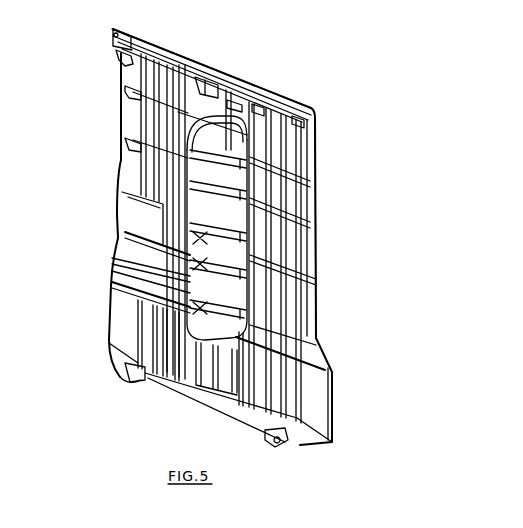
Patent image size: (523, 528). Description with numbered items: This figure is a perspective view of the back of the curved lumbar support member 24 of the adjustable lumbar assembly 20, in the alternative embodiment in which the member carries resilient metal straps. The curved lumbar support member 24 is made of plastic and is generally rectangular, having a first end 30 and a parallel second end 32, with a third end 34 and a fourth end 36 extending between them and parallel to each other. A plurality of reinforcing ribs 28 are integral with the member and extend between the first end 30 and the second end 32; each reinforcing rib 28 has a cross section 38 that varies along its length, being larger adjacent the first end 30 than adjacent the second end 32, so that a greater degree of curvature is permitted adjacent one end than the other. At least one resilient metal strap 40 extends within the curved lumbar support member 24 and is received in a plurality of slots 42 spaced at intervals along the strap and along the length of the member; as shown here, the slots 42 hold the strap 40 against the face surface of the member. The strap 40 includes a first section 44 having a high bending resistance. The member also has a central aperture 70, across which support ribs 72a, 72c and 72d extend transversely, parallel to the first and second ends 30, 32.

The adjustable lumbar assembly 20 is at (318, 99).
The curved lumbar support member 24 is at (317, 265).
The reinforcing ribs 28 is at (121, 50).
The first end 30 is at (178, 52).
The second end 32 is at (193, 402).
The third end 34 is at (121, 200).
The fourth end 36 is at (306, 298).
The cross section 38 is at (121, 168).
The resilient metal strap 40 is at (116, 272).
The slots 42 is at (130, 86).
The first section 44 is at (120, 210).
The central aperture 70 is at (125, 236).
The support rib 72a is at (188, 133).
The support rib 72c is at (112, 258).
The support rib 72d is at (112, 296).